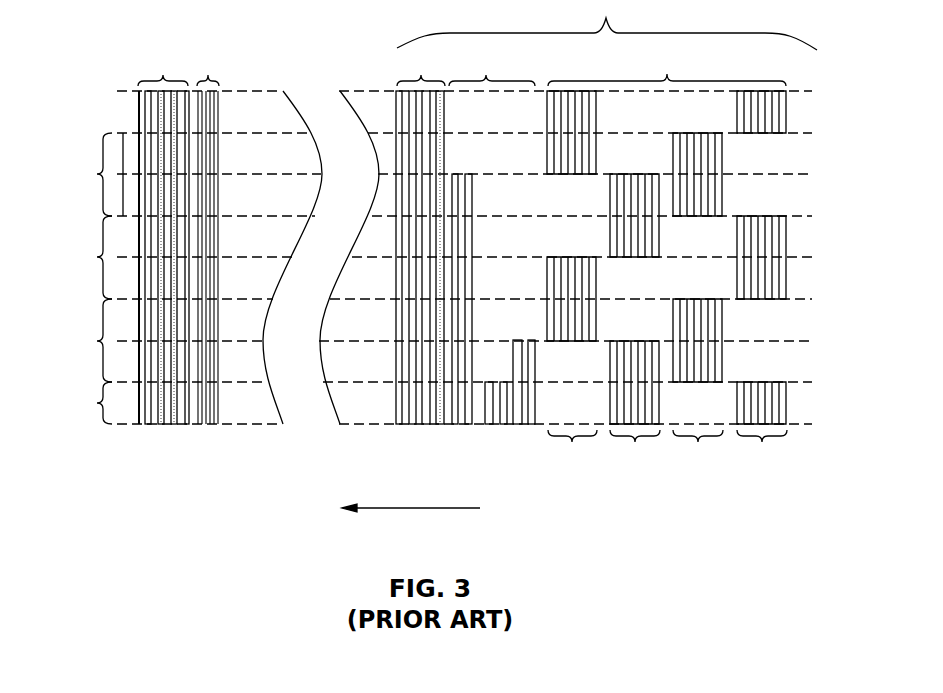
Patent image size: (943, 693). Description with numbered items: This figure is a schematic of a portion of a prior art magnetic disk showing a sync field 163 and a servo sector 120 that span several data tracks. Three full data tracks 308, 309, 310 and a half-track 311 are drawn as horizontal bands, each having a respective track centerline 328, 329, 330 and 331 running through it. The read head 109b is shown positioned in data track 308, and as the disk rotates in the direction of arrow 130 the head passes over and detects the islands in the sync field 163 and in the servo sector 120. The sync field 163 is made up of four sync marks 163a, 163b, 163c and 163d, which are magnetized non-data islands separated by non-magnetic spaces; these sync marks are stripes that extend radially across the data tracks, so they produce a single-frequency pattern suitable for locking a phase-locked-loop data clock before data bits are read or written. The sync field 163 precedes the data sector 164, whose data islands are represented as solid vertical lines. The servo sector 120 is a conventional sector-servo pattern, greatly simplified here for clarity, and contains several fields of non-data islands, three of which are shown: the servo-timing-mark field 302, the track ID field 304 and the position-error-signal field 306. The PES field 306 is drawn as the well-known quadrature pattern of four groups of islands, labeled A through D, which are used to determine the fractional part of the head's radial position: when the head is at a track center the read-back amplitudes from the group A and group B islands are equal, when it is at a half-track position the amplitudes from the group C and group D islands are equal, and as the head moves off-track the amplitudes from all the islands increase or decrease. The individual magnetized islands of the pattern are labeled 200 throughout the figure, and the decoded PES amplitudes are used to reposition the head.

The servo sector 120 is at (583, 32).
The sync field 163 is at (161, 76).
The sync mark 163a is at (146, 424).
The sync mark 163b is at (160, 424).
The sync mark 163c is at (173, 424).
The sync mark 163d is at (187, 424).
The data sector 164 is at (202, 80).
The read head 109b is at (124, 133).
The data track 308 is at (102, 153).
The data track 309 is at (102, 242).
The data track 310 is at (102, 314).
The half-track 311 is at (102, 402).
The magnetic transition 200 is at (140, 393).
The servo-timing-mark (STM) field 302 is at (397, 83).
The track ID (TID) field 304 is at (492, 79).
The position-error-signal (PES) field 306 is at (740, 79).
The track centerline 328 is at (773, 173).
The track centerline 329 is at (795, 257).
The track centerline 330 is at (778, 340).
The track centerline 331 is at (793, 423).
The arrow 130 is at (412, 509).